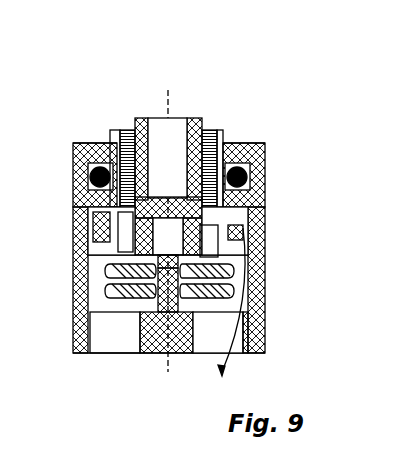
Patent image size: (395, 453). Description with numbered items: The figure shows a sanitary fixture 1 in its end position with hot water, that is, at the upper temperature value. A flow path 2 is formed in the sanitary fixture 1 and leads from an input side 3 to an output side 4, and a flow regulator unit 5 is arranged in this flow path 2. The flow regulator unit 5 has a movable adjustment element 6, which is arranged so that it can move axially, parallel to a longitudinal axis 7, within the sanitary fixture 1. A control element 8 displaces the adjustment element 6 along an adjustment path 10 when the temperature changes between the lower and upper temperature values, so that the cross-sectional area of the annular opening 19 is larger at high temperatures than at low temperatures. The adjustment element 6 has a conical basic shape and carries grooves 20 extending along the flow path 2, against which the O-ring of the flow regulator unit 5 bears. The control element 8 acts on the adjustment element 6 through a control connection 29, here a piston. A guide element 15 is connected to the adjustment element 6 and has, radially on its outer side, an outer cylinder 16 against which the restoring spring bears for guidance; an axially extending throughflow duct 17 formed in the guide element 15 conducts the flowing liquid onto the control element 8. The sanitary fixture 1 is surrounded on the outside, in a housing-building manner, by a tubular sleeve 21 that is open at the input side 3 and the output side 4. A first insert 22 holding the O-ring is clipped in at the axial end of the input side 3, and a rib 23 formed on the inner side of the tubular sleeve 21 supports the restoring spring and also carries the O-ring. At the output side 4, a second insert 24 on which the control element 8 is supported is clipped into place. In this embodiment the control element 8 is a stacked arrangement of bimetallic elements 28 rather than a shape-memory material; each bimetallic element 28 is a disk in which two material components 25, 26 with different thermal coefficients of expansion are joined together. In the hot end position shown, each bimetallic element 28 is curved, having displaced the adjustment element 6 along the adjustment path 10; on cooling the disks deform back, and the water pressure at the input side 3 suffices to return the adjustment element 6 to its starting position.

The sanitary fixture 1 is at (298, 238).
The flow path 2 is at (237, 135).
The input side 3 is at (207, 76).
The output side 4 is at (168, 403).
The flow regulator unit 5 is at (268, 180).
The adjustment element 6 is at (128, 160).
The longitudinal axis 7 is at (166, 100).
The control element 8 is at (86, 287).
The adjustment path 10 is at (139, 140).
The guide element 15 is at (243, 222).
The outer cylinder 16 is at (245, 230).
The throughflow duct 17 is at (236, 246).
The annular opening 19 is at (92, 163).
The grooves 20 is at (113, 148).
The tubular sleeve 21 is at (85, 238).
The first insert 22 is at (80, 160).
The rib 23 is at (90, 193).
The second insert 24 is at (83, 355).
The first material component 25 is at (88, 262).
The second material component 26 is at (130, 266).
The bimetallic element 28 is at (201, 312).
The control connection 29 is at (135, 355).